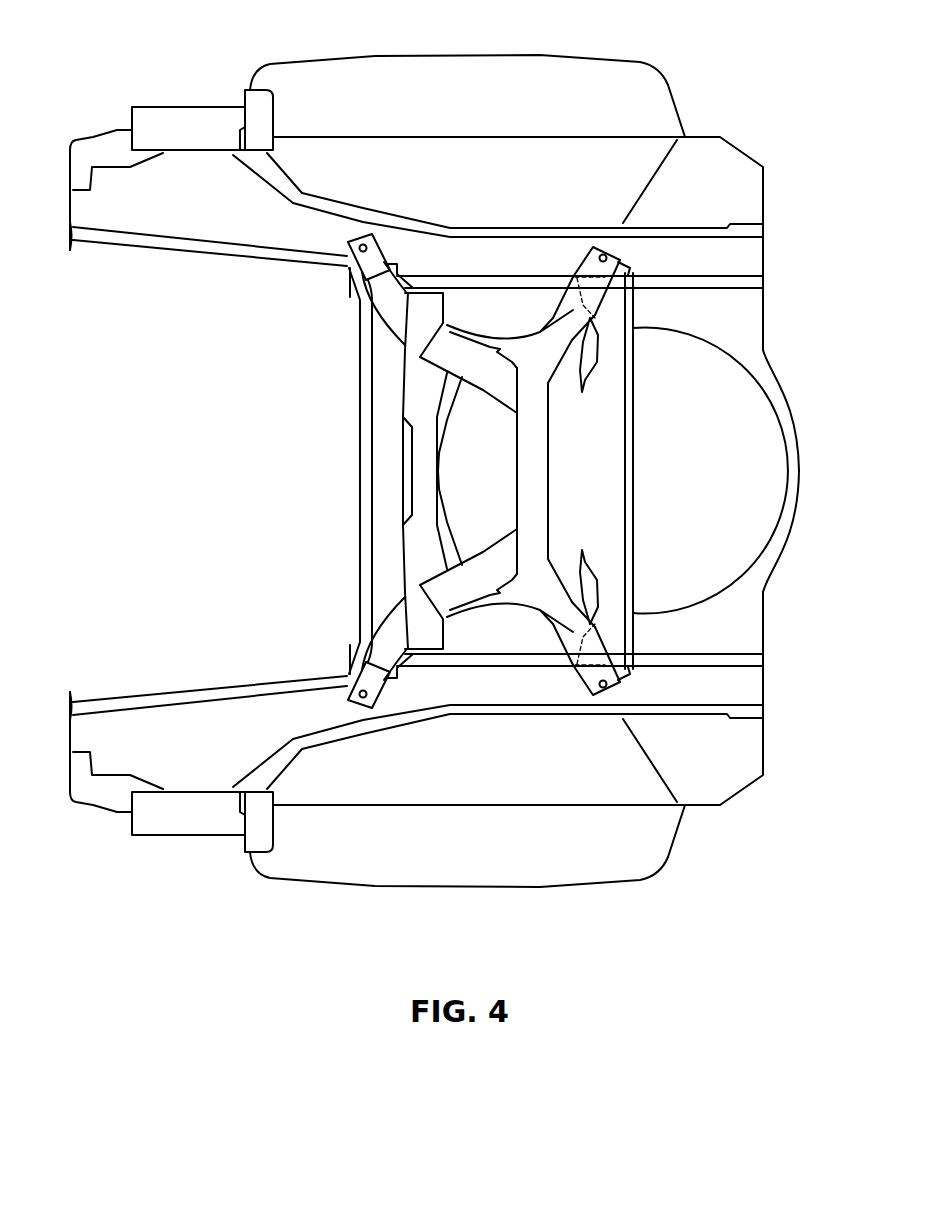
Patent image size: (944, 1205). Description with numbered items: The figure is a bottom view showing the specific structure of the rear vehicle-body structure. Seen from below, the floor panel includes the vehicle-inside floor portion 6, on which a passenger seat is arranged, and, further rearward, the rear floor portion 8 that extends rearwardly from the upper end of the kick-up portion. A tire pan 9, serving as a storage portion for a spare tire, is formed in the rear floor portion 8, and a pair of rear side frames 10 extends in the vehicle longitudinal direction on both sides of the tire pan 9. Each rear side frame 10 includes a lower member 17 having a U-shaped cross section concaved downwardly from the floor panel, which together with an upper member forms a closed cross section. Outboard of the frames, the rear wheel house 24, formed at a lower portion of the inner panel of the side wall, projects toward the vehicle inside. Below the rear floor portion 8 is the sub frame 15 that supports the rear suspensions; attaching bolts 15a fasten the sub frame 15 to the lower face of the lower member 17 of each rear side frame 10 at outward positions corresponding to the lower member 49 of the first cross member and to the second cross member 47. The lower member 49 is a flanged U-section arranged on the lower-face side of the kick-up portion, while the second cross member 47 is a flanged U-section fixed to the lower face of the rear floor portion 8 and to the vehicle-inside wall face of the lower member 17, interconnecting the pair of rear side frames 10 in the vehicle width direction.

The vehicle-inside floor portion 6 is at (190, 453).
The rear floor portion 8 is at (742, 335).
The tire pan 9 is at (753, 472).
The rear side frame 10 is at (727, 215).
The sub frame 15 is at (505, 335).
The attaching bolt 15a is at (363, 243).
The lower member 17 is at (310, 240).
The rear wheel house 24 is at (470, 203).
The second cross member 47 is at (620, 457).
The lower member 49 is at (380, 515).